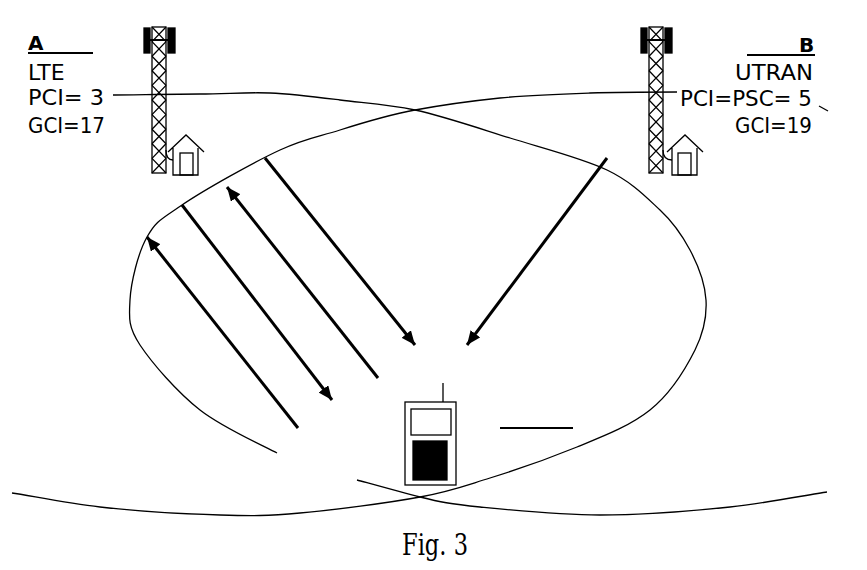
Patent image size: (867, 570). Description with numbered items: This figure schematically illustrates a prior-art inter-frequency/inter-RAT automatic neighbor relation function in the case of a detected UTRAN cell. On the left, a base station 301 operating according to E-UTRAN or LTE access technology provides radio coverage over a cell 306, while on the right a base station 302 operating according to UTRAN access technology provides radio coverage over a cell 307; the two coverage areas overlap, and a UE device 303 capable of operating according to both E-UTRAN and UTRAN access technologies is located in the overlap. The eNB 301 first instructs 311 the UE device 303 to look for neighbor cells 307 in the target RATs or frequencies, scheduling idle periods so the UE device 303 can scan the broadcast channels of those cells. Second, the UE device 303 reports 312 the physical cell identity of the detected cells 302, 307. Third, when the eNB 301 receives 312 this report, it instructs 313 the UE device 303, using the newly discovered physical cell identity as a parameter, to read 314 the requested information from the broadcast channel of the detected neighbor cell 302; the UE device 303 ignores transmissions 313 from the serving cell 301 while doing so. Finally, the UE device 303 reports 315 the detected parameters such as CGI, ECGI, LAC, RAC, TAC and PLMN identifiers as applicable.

The base station 301 is at (183, 105).
The base station 302 is at (620, 105).
The UE device 303 is at (405, 430).
The cell 306 is at (359, 304).
The cell 307 is at (478, 303).
The instruction 311 is at (348, 262).
The report 312 is at (311, 292).
The instruction 313 is at (272, 322).
The read 314 is at (531, 260).
The report 315 is at (235, 348).